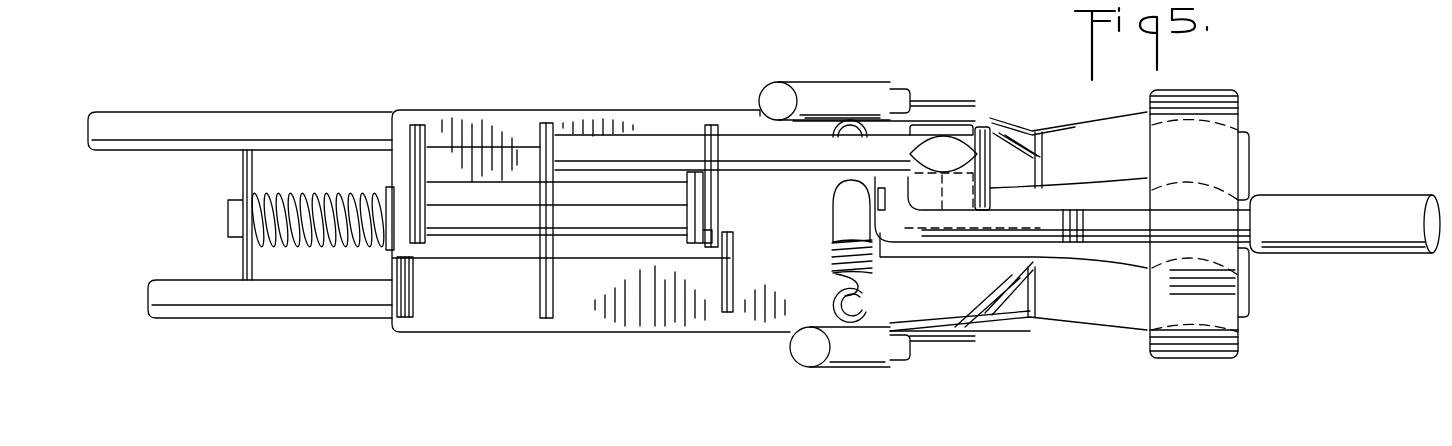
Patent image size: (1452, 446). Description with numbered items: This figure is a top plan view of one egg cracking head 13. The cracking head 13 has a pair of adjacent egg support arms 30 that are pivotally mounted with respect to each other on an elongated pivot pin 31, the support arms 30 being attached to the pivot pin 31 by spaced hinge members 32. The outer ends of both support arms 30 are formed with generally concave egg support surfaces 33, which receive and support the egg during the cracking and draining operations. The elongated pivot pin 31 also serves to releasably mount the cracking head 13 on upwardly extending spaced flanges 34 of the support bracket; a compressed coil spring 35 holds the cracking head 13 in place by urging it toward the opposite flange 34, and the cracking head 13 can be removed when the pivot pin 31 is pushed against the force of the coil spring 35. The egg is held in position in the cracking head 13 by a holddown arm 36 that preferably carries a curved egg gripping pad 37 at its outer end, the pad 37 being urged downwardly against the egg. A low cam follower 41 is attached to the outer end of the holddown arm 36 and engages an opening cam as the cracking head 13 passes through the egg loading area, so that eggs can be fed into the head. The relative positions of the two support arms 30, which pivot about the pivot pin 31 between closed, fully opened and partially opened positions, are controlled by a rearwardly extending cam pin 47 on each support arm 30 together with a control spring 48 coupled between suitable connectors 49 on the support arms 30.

The cracking head 13 is at (1003, 114).
The egg support arms 30 is at (478, 122).
The elongated pivot pin 31 is at (620, 232).
The hinge members 32 is at (450, 290).
The egg support surfaces 33 is at (1120, 164).
The flanges 34 is at (244, 263).
The coil spring 35 is at (302, 197).
The holddown arm 36 is at (1220, 217).
The egg gripping pad 37 is at (1235, 110).
The cam follower 41 is at (1348, 212).
The cam pin 47 is at (178, 283).
The control spring 48 is at (832, 272).
The connectors 49 is at (862, 118).